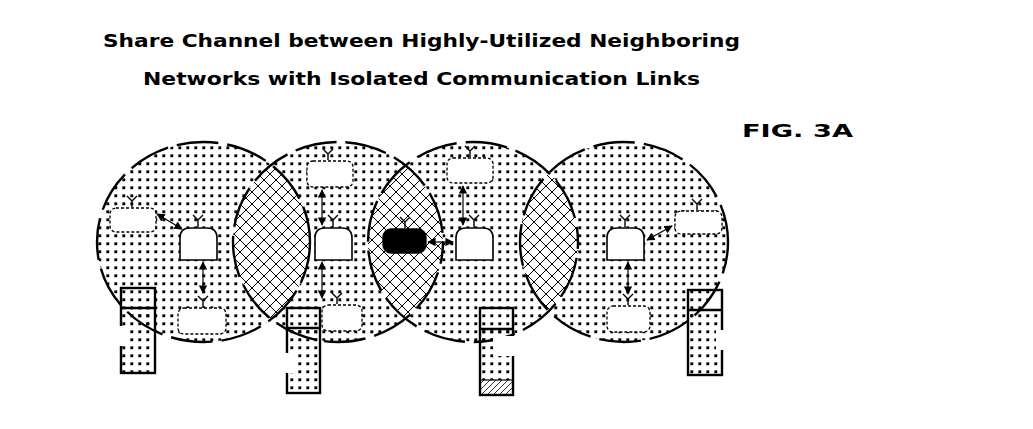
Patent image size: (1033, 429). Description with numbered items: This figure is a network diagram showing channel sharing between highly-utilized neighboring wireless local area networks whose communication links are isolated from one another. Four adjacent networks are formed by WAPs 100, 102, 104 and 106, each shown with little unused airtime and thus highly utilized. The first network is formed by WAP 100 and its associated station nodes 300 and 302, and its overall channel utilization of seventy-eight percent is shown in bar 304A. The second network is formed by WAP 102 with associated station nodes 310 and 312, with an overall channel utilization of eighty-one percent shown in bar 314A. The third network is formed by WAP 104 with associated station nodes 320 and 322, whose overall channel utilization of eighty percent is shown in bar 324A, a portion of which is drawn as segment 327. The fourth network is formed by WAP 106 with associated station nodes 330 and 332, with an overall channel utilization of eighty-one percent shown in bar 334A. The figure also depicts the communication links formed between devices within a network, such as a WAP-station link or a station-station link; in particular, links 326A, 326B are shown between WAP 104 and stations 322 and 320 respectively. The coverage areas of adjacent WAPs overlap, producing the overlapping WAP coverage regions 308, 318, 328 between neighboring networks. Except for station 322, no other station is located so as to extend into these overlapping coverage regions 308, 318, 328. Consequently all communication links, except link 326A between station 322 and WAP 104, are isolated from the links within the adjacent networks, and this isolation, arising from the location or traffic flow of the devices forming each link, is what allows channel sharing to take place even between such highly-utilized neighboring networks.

The station node 300 is at (110, 212).
The station node 302 is at (222, 332).
The overlapping WAP coverage region 308 is at (263, 168).
The station node 310 is at (309, 164).
The station node 312 is at (345, 333).
The overlapping WAP coverage region 318 is at (405, 172).
The station node 320 is at (476, 156).
The station node 322 is at (404, 249).
The communication link 326A is at (443, 248).
The communication link 326B is at (446, 190).
The overlapping WAP coverage region 328 is at (549, 172).
The station node 330 is at (718, 214).
The station node 332 is at (638, 332).
The WAP 100 is at (212, 226).
The WAP 102 is at (342, 228).
The WAP 104 is at (487, 228).
The WAP 106 is at (634, 228).
The bar 304A is at (122, 352).
The bar 314A is at (288, 381).
The bar 324A is at (514, 360).
The shared channel portion of channel 3 327 is at (480, 388).
The bar 334A is at (723, 356).